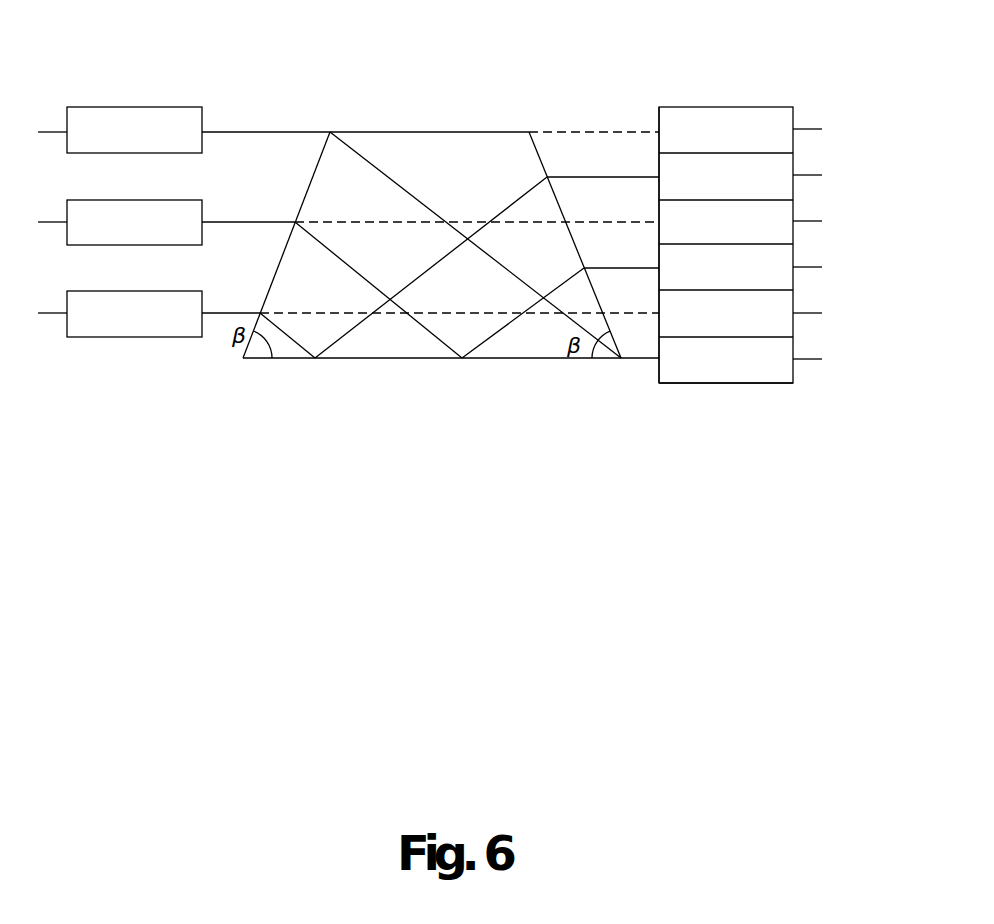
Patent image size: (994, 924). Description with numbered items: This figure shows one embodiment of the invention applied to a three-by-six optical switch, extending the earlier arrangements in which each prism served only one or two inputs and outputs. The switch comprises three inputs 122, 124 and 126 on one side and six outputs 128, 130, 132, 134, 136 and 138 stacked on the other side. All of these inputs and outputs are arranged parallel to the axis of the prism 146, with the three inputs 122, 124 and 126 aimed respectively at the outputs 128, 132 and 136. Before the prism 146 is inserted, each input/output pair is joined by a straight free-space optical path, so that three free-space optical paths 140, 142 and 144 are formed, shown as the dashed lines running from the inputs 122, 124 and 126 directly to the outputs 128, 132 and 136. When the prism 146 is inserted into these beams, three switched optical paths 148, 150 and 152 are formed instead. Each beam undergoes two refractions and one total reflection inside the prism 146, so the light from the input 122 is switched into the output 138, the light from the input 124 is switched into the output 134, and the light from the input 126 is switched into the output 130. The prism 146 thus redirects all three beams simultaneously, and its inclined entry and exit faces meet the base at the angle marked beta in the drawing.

The input 122 is at (128, 107).
The input 124 is at (120, 200).
The input 126 is at (102, 337).
The output 128 is at (733, 107).
The output 130 is at (795, 168).
The output 132 is at (658, 205).
The output 134 is at (795, 277).
The output 136 is at (658, 323).
The output 138 is at (738, 383).
The free-space optical path 140 is at (587, 132).
The free-space optical path 142 is at (350, 222).
The free-space optical path 144 is at (320, 313).
The prism 146 is at (378, 362).
The switched optical path 148 is at (633, 360).
The switched optical path 150 is at (520, 360).
The switched optical path 152 is at (283, 360).